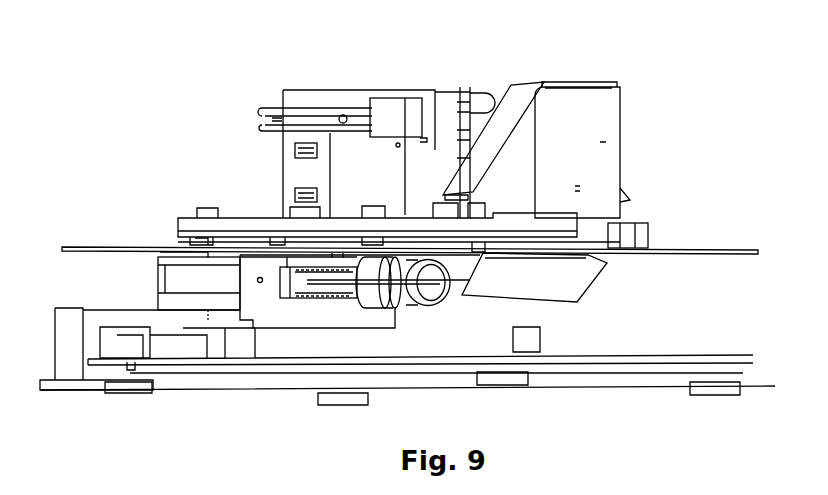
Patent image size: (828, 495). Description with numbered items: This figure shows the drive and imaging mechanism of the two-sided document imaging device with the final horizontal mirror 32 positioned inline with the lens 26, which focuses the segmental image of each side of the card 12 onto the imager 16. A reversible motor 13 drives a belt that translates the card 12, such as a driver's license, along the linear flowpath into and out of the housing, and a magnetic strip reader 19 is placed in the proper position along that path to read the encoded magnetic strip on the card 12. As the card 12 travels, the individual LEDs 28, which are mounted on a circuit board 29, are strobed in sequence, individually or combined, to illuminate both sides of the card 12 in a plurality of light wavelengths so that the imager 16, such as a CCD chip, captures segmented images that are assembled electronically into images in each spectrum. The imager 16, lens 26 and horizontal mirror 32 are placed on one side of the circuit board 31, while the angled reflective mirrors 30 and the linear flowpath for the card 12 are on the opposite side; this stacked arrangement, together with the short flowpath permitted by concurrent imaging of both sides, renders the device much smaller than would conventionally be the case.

The card 12 is at (592, 131).
The reversible motor 13 is at (183, 280).
The imager 16 is at (298, 288).
The magnetic strip reader 19 is at (390, 102).
The lens 26 is at (427, 302).
The LED 28 is at (482, 92).
The circuit board 29 is at (463, 115).
The angled reflective mirrors 30 is at (512, 88).
The circuit board 31 is at (698, 238).
The horizontal mirror 32 is at (587, 288).